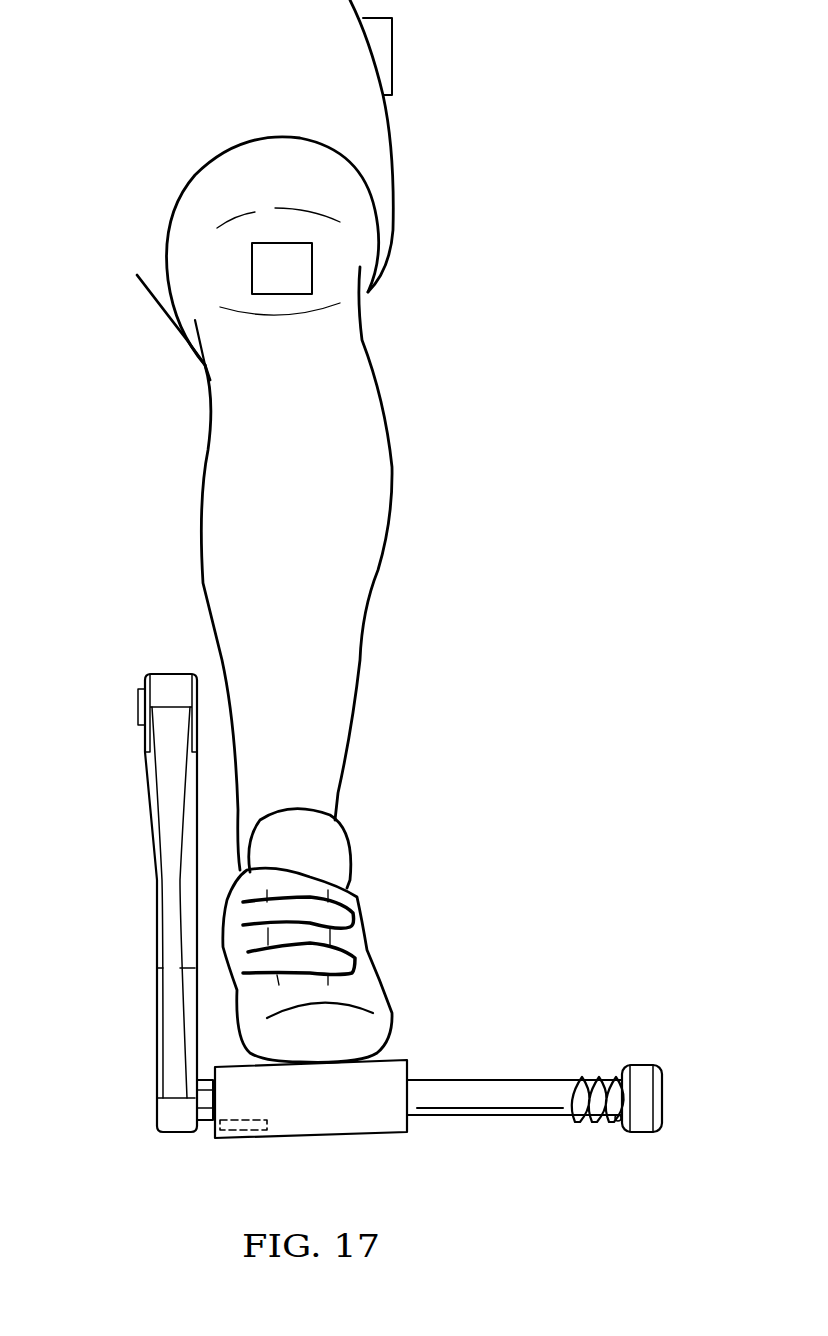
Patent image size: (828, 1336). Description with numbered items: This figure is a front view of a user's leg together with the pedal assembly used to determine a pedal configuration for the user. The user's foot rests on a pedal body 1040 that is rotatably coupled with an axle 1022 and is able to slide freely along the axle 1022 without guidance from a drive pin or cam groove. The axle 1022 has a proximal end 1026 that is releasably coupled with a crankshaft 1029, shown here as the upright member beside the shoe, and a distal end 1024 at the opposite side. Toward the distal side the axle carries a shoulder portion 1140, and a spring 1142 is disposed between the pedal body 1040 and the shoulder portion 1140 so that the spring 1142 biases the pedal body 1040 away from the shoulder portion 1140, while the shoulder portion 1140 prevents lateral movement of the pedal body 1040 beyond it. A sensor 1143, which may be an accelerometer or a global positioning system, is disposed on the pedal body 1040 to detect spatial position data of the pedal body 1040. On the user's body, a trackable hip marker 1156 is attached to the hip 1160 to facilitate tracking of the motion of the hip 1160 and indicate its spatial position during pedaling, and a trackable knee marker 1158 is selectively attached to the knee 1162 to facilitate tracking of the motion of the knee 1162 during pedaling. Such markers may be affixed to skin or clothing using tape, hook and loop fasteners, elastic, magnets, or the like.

The axle 1022 is at (487, 1118).
The distal end 1024 is at (613, 1127).
The proximal end 1026 is at (205, 1130).
The crankshaft 1029 is at (152, 876).
The pedal body 1040 is at (362, 1137).
The shoulder portion 1140 is at (640, 1066).
The spring 1142 is at (597, 1078).
The sensor 1143 is at (253, 1140).
The trackable hip marker 1156 is at (393, 57).
The trackable knee marker 1158 is at (282, 243).
The hip 1160 is at (400, 127).
The knee 1162 is at (372, 305).